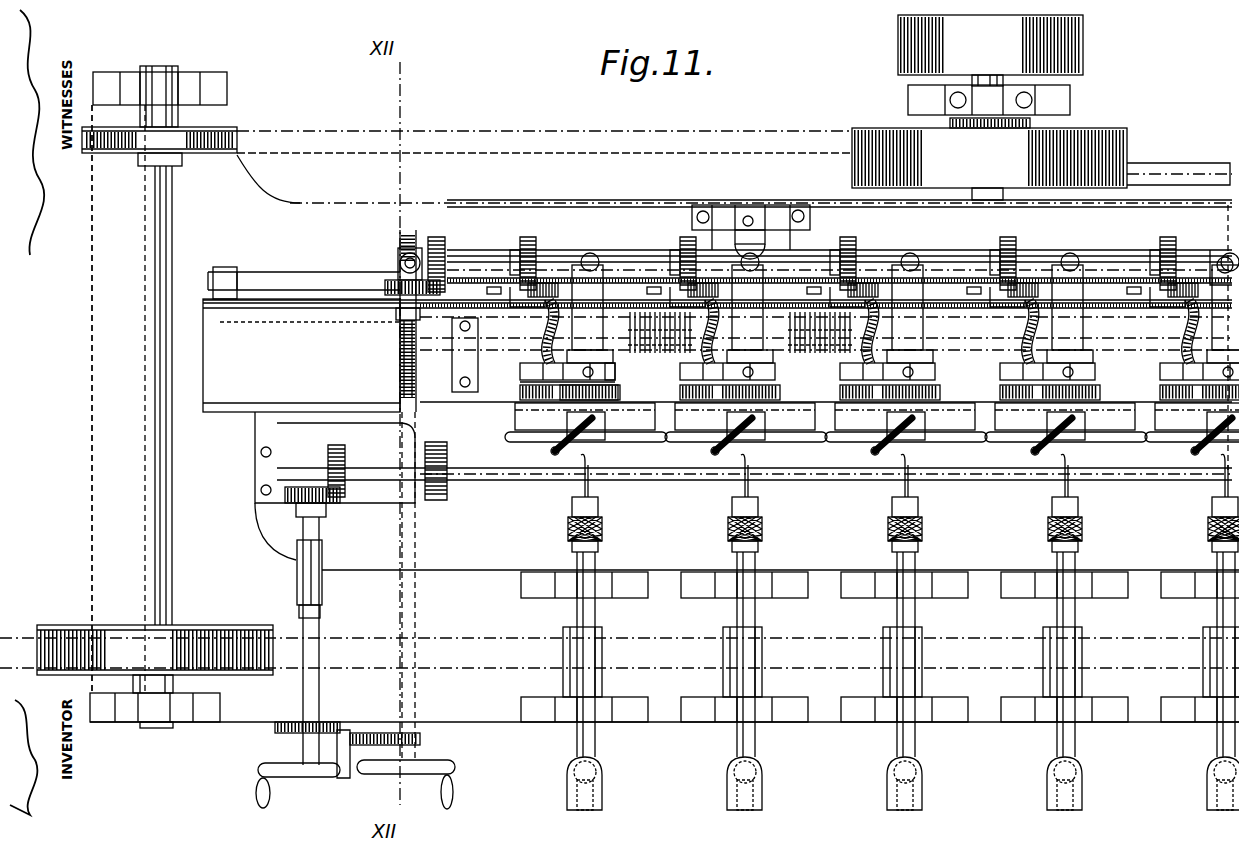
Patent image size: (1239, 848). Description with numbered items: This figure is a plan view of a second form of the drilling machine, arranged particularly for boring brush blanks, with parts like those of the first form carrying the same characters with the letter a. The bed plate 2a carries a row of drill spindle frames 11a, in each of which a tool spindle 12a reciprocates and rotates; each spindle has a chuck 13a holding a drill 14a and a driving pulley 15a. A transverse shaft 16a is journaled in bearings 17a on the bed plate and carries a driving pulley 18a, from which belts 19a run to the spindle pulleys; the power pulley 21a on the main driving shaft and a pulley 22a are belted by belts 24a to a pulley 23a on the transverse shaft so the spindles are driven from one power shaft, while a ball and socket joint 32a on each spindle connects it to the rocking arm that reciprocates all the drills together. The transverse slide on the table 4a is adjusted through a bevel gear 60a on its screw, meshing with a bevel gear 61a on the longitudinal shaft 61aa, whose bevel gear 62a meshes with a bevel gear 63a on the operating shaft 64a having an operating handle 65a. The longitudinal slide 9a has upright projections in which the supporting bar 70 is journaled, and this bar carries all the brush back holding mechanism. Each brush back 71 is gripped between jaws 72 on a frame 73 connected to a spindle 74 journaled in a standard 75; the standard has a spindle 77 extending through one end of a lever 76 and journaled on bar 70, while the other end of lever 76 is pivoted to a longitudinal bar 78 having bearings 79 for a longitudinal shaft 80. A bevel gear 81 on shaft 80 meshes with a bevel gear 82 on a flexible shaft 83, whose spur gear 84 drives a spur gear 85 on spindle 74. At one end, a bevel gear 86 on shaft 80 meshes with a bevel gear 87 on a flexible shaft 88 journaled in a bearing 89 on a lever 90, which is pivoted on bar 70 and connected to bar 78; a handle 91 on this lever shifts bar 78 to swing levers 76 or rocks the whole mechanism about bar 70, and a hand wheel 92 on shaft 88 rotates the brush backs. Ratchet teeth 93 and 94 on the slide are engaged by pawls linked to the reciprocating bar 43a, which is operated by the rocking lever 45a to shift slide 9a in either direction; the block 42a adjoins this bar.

The bed plate 2a is at (93, 336).
The table 4a is at (301, 355).
The longitudinal slide 9a is at (482, 405).
The drill spindle frame 11a is at (628, 576).
The tool spindle 12a is at (596, 612).
The chuck 13a is at (603, 527).
The drill 14a is at (590, 493).
The driving pulley 15a is at (603, 650).
The transverse shaft 16a is at (132, 399).
The bearing 17a is at (185, 72).
The driving pulley 18a is at (205, 628).
The belt 19a is at (477, 648).
The pulley 21a is at (990, 50).
The pulley 22a is at (1095, 140).
The pulley 23a is at (237, 130).
The belt 24a is at (545, 134).
The ball and socket joint 32a is at (603, 765).
The bracket 42a is at (226, 270).
The reciprocating bar 43a is at (293, 280).
The rocking lever 45a is at (758, 232).
The bevel gear 60a is at (374, 486).
The bevel gear 61a is at (754, 484).
The longitudinal shaft 61aa is at (578, 482).
The bevel gear 62a is at (332, 450).
The bevel gear 63a is at (336, 503).
The operating shaft 64a is at (300, 718).
The operating handle 65a is at (312, 770).
The supporting bar 70 is at (483, 355).
The brush back 71 is at (652, 442).
The jaws 72 is at (605, 440).
The frame 73 is at (660, 417).
The spindle 74 is at (620, 383).
The standard 75 is at (610, 368).
The lever 76 is at (745, 314).
The spindle 77 is at (590, 368).
The longitudinal bar 78 is at (630, 250).
The bearing 79 is at (515, 250).
The longitudinal shaft 80 is at (565, 258).
The bevel gear 81 is at (530, 240).
The bevel gear 82 is at (533, 300).
The flexible shaft 83 is at (545, 330).
The spur gear 84 is at (520, 390).
The spur gear 85 is at (615, 393).
The bevel gear 86 is at (440, 240).
The bevel gear 87 is at (392, 282).
The flexible shaft 88 is at (404, 335).
The bearing 89 is at (398, 314).
The lever 90 is at (402, 250).
The handle 91 is at (365, 733).
The hand wheel 92 is at (406, 784).
The ratchet teeth 93 is at (757, 332).
The ratchet teeth 94 is at (838, 358).